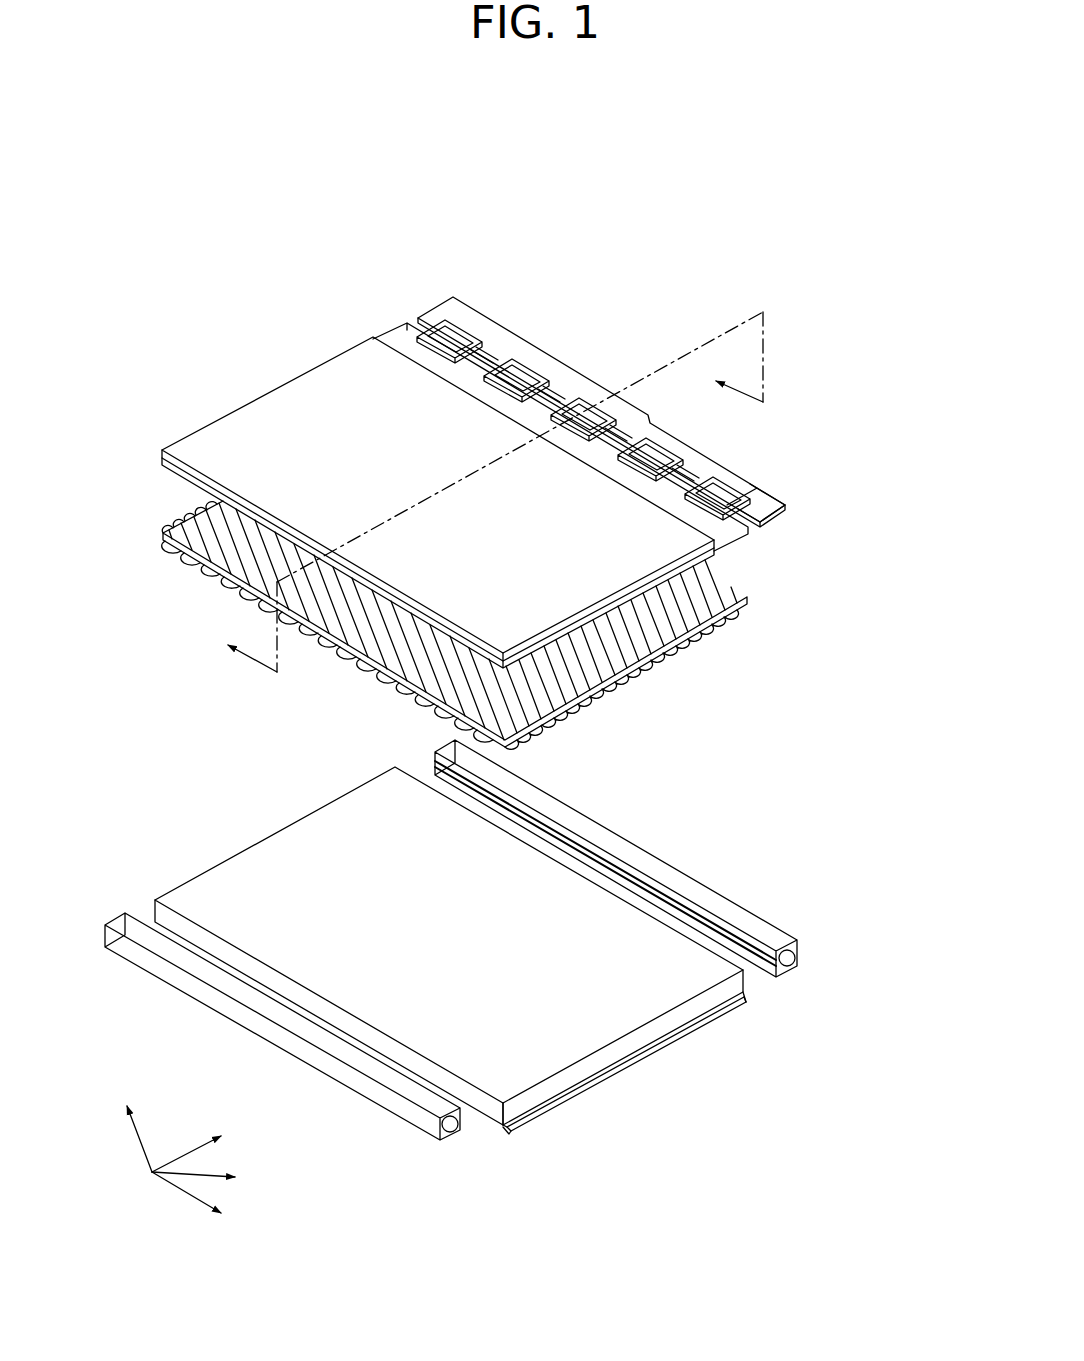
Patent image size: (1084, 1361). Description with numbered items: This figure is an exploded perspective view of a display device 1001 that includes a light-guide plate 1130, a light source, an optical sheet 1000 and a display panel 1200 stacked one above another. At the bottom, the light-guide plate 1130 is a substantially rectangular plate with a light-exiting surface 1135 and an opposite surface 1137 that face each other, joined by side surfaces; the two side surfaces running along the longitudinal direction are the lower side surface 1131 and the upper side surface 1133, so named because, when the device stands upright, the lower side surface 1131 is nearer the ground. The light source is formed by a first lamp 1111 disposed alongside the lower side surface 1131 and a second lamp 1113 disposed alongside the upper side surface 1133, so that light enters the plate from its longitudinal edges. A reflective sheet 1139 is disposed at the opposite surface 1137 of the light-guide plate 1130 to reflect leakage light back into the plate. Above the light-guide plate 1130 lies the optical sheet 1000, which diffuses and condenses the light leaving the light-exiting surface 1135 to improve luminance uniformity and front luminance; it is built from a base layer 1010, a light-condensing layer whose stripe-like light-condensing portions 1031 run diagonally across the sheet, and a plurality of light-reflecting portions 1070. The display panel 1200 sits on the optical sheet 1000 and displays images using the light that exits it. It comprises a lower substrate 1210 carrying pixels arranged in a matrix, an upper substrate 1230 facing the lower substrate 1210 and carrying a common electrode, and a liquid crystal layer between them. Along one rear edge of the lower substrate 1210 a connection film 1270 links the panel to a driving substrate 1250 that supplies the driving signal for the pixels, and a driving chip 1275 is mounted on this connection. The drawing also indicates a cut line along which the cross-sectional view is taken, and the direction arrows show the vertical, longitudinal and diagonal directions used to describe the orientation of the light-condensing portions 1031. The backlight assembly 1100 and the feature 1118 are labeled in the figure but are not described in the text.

The display device 1001 is at (481, 197).
The display panel 1200 is at (868, 490).
The lower substrate 1210 is at (737, 524).
The upper substrate 1230 is at (697, 542).
The driving substrate 1250 is at (772, 507).
The connection film 1270 is at (737, 488).
The driving chip 1275 is at (715, 489).
The optical sheet 1000 is at (868, 650).
The base layer 1010 is at (697, 645).
The light-condensing portions 1031 is at (720, 623).
The light-reflecting portions 1070 is at (660, 665).
The receiving container 1100 is at (876, 950).
The first lamp 1111 is at (465, 1143).
The second lamp 1113 is at (797, 970).
The coupling hole 1118 is at (800, 956).
The light-guide plate 1130 is at (588, 1187).
The lower side surface 1131 is at (512, 1124).
The upper side surface 1133 is at (748, 988).
The light-exiting surface 1135 is at (567, 1040).
The opposite surface 1137 is at (653, 1046).
The reflective sheet 1139 is at (505, 1130).